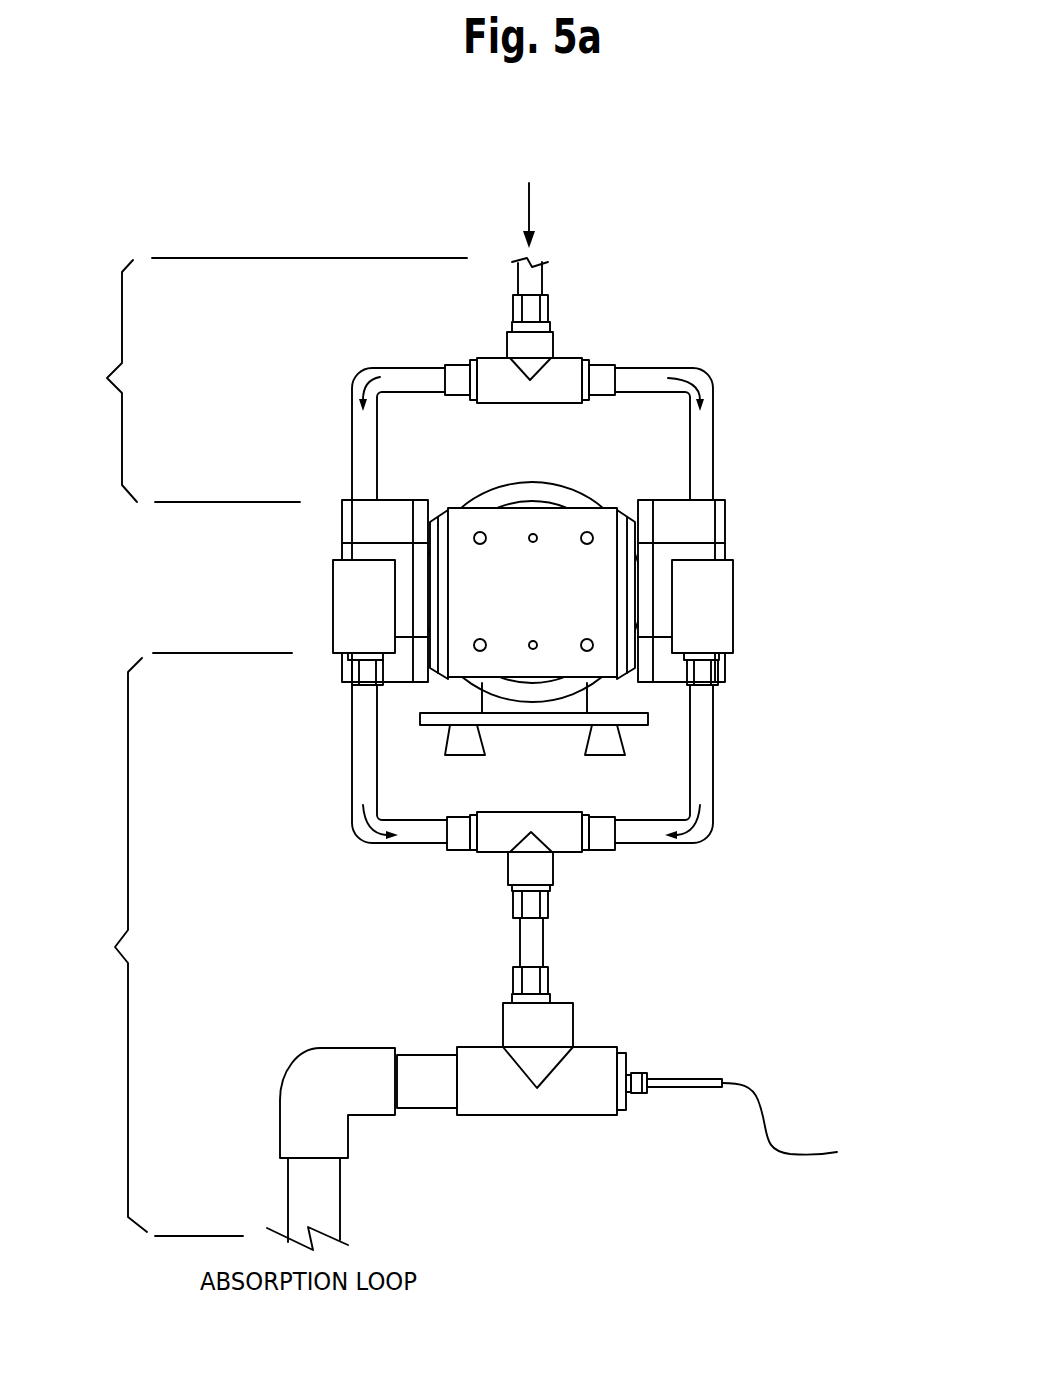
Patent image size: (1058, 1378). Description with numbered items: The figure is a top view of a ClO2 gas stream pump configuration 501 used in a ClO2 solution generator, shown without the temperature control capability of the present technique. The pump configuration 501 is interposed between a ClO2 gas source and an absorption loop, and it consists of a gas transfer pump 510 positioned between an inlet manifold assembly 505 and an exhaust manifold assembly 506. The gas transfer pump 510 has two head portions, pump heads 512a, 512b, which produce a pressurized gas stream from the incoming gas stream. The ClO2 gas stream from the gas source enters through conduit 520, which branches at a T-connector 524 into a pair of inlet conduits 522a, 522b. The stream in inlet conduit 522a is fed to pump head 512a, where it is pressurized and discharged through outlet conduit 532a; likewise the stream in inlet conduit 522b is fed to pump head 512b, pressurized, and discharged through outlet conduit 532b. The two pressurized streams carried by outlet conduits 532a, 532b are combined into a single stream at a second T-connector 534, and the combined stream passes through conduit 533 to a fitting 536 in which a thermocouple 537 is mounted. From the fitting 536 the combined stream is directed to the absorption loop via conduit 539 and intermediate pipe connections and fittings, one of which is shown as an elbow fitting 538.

The ClO2 gas stream pump configuration 501 is at (711, 230).
The inlet manifold assembly 505 is at (261, 380).
The exhaust manifold assembly 506 is at (180, 944).
The gas transfer pump 510 is at (617, 508).
The pump head 512a is at (357, 522).
The pump head 512b is at (705, 513).
The conduit 520 is at (543, 272).
The inlet conduit 522a is at (376, 367).
The inlet conduit 522b is at (690, 369).
The T-connector 524 is at (507, 349).
The outlet conduit 532a is at (360, 792).
The outlet conduit 532b is at (708, 733).
The conduit 533 is at (520, 937).
The T-connector 534 is at (567, 848).
The fitting 536 is at (565, 1033).
The thermocouple 537 is at (642, 1094).
The elbow fitting 538 is at (303, 1073).
The conduit 539 is at (300, 1190).